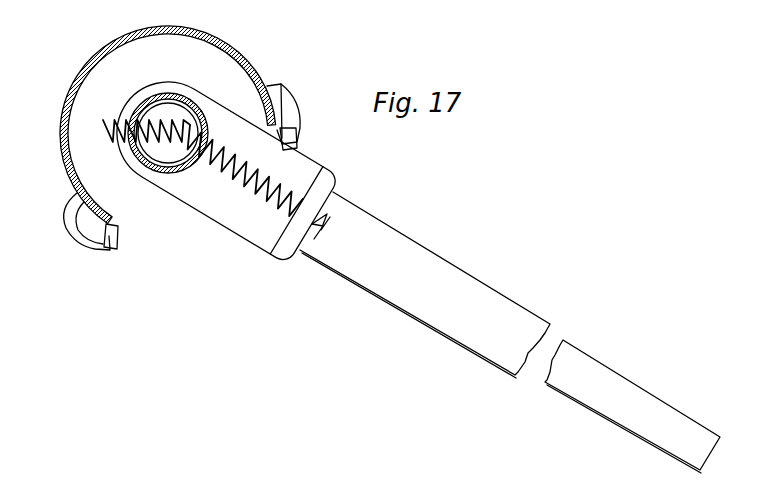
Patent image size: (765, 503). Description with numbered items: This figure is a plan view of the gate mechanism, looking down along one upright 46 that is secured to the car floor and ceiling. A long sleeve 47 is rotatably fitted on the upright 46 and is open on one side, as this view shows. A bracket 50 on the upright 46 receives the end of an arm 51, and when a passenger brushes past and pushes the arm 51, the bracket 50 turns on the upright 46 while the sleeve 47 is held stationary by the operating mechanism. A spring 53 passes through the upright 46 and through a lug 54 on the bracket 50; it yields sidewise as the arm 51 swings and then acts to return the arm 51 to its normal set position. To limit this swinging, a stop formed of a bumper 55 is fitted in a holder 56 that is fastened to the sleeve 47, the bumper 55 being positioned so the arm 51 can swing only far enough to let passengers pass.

The upright 46 is at (153, 94).
The sleeve 47 is at (62, 168).
The bracket 50 is at (215, 218).
The arm 51 is at (457, 281).
The spring 53 is at (252, 192).
The lug 54 is at (292, 233).
The bumper 55 is at (298, 141).
The holder 56 is at (292, 92).